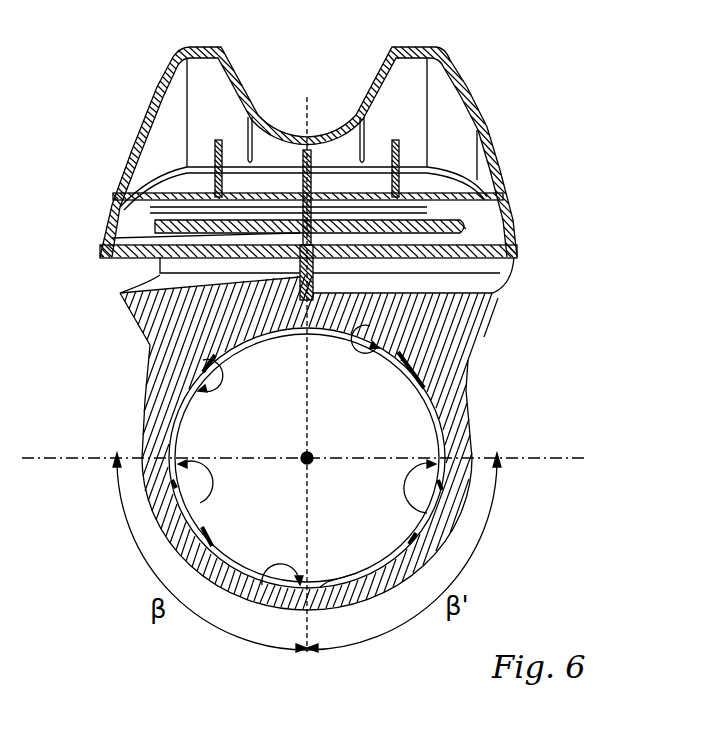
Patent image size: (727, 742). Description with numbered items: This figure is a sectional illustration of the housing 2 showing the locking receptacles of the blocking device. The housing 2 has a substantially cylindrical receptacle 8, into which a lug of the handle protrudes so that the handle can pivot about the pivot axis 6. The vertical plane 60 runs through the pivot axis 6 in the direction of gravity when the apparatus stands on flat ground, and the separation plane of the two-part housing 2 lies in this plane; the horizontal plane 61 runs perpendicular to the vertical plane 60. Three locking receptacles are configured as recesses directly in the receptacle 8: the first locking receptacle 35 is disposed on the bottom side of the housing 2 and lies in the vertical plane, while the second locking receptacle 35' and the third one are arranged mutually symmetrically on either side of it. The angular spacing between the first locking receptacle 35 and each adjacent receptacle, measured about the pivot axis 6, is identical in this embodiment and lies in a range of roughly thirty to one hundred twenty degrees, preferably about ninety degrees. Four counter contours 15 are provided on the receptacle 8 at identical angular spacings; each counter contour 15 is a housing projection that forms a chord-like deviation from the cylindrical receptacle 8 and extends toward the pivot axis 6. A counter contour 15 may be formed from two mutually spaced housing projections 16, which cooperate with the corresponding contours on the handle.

The housing 2 is at (480, 142).
The pivot axis 6 is at (307, 458).
The receptacle 8 is at (170, 447).
The counter contour 15 is at (203, 360).
The housing projection 16 is at (195, 410).
The first locking receptacle 35 is at (268, 623).
The second locking receptacle 35' is at (137, 487).
The vertical plane 60 is at (310, 117).
The horizontal plane 61 is at (550, 456).